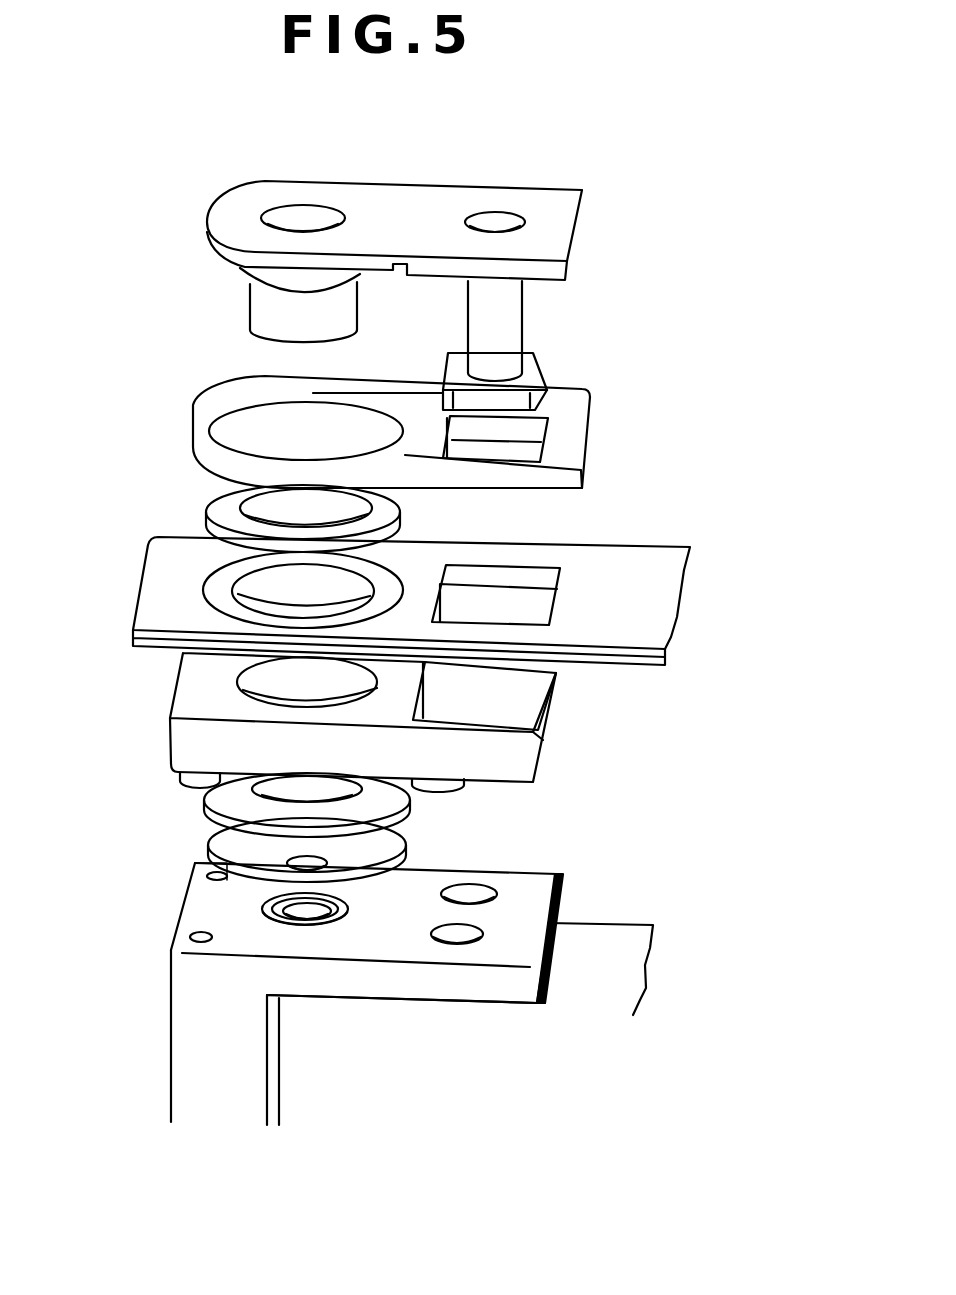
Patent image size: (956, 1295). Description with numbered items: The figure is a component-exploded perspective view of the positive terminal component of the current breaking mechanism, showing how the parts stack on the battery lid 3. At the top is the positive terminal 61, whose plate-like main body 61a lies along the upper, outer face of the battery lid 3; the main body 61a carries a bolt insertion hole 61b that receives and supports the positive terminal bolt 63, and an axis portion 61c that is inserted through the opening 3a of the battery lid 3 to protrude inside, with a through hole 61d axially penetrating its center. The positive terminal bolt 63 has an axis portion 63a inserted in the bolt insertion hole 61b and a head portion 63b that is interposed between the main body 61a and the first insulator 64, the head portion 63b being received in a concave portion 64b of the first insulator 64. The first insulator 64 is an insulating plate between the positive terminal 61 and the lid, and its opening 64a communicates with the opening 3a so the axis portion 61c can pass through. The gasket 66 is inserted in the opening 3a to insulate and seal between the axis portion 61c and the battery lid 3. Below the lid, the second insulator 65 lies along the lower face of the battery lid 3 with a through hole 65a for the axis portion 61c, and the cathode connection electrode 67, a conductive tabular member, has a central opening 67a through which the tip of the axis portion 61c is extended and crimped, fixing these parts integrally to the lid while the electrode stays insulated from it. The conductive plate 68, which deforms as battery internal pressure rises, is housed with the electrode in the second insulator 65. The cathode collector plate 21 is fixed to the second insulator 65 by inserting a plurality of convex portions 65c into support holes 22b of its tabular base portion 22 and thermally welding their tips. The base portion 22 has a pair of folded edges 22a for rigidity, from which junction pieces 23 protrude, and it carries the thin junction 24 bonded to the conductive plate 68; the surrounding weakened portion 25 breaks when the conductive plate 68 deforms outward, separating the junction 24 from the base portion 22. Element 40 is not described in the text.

The battery lid 3 is at (138, 582).
The opening 3a is at (238, 600).
The cathode collector plate 21 is at (167, 1032).
The base portion 22 is at (530, 876).
The edges 22a is at (418, 988).
The support holes 22b is at (200, 873).
The junction pieces 23 is at (212, 1088).
The junction 24 is at (305, 906).
The weakened portion 25 is at (345, 920).
The base 40 is at (620, 947).
The positive terminal 61 is at (445, 180).
The main body 61a is at (390, 212).
The bolt insertion hole 61b is at (492, 218).
The axis portion 61c is at (266, 303).
The through hole 61d is at (300, 215).
The positive terminal bolt 63 is at (634, 294).
The axis portion 63a is at (503, 314).
The head portion 63b is at (535, 357).
The first insulator 64 is at (596, 437).
The opening 64a is at (220, 407).
The concave portion 64b is at (527, 450).
The second insulator 65 is at (183, 680).
The through hole 65a is at (263, 684).
The convex portions 65c is at (185, 775).
The gasket 66 is at (208, 505).
The cathode connection electrode 67 is at (205, 802).
The opening 67a is at (343, 792).
The conductive plate 68 is at (212, 840).